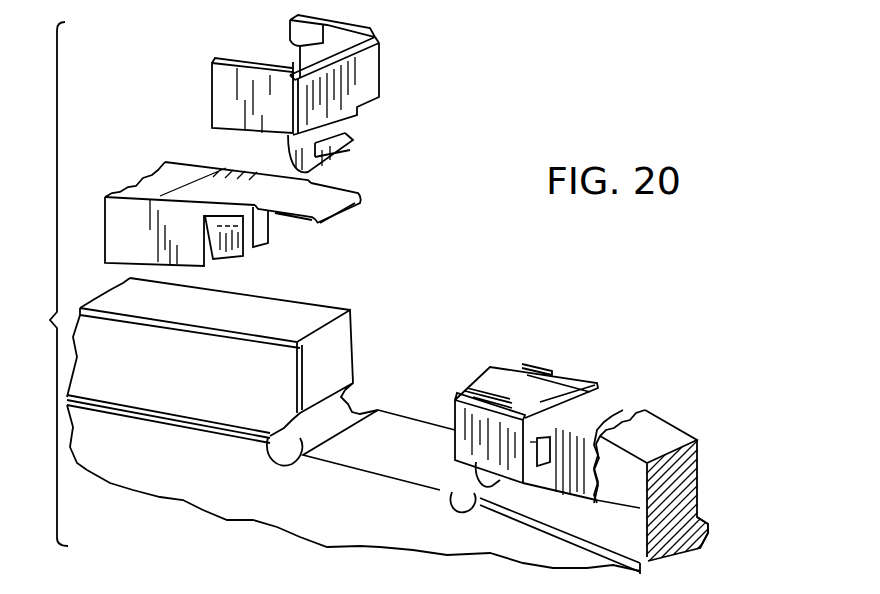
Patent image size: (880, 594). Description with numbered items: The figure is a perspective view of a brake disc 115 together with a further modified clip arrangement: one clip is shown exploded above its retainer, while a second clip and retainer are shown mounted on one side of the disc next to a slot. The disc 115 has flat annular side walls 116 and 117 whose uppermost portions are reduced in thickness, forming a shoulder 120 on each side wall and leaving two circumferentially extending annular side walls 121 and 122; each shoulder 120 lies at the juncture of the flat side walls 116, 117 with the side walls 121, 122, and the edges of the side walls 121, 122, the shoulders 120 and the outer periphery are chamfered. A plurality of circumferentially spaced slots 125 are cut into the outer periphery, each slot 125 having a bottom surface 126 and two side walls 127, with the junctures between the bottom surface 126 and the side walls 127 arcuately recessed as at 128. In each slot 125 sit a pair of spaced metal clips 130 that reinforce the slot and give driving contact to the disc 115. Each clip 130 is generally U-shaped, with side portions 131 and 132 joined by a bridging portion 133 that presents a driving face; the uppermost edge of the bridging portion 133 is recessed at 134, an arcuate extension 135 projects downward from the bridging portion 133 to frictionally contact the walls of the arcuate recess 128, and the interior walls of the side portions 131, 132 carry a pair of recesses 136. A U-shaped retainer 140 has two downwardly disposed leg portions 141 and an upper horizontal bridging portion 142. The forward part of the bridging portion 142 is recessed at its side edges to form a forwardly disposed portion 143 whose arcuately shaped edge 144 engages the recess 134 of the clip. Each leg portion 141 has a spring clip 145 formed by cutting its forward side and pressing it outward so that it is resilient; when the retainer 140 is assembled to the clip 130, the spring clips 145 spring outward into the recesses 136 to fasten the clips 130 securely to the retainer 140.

The brake disc 115 is at (178, 503).
The annular side wall 116 is at (113, 468).
The annular side wall 117 is at (710, 531).
The shoulder 120 is at (96, 396).
The annular side wall 121 is at (628, 513).
The annular side wall 122 is at (700, 460).
The slot 125 is at (356, 414).
The bottom surface 126 is at (395, 432).
The side wall 127 is at (342, 343).
The arcuate recess 128 is at (283, 457).
The metal clip 130 is at (373, 243).
The side portion 131 is at (343, 23).
The side portion 132 is at (222, 99).
The bridging portion 133 is at (360, 87).
The recess 134 is at (353, 45).
The arcuate extension 135 is at (340, 143).
The recess 136 is at (300, 50).
The retainer 140 is at (389, 350).
The leg portion 141 is at (120, 232).
The bridging portion 142 is at (177, 168).
The forwardly disposed portion 143 is at (335, 198).
The arcuately shaped edge 144 is at (330, 220).
The spring clip 145 is at (233, 252).